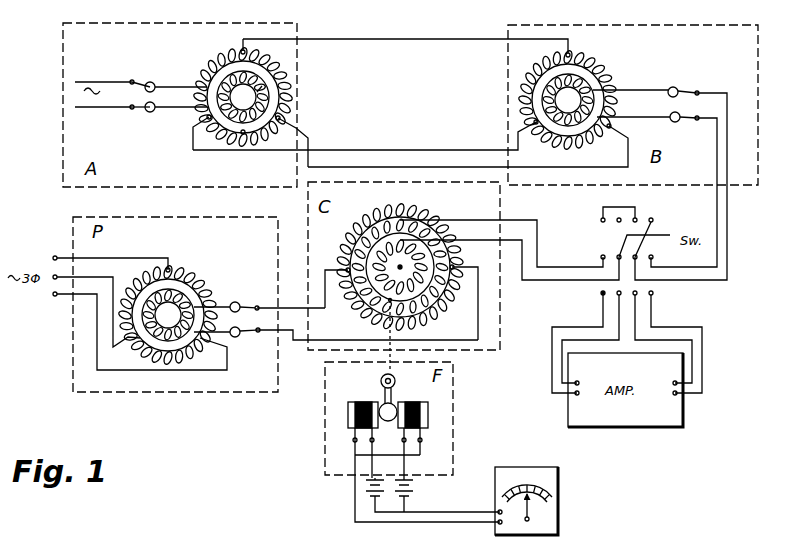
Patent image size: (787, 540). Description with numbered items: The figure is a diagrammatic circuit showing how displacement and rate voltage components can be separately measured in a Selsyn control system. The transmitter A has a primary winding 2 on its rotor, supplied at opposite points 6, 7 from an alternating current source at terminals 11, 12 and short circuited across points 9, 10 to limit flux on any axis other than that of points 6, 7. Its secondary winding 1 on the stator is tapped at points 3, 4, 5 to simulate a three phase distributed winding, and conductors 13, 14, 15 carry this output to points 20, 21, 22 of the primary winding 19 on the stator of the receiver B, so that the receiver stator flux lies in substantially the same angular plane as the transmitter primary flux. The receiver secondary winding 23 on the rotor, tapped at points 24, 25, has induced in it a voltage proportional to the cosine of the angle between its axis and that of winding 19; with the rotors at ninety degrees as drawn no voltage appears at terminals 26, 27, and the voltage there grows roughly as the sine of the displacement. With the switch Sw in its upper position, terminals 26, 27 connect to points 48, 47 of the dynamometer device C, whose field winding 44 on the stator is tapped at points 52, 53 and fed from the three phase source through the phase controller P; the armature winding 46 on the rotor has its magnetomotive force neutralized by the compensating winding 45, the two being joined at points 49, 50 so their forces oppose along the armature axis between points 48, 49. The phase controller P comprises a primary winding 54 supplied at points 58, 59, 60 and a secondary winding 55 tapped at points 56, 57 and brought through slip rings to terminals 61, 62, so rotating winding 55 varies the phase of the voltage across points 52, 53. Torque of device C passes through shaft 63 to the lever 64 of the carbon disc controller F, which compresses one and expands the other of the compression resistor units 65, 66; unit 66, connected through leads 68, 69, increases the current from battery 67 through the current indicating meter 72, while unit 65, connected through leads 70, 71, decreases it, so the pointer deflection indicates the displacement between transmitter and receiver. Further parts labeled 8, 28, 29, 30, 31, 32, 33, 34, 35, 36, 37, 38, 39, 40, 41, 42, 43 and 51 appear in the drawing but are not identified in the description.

The secondary winding 1 is at (262, 80).
The primary winding 2 is at (262, 86).
The tap point 3 is at (242, 49).
The tap point 4 is at (205, 119).
The tap point 5 is at (287, 121).
The connection point 6 is at (243, 134).
The connection point 7 is at (212, 72).
The rotor winding of motor A 8 is at (232, 93).
The short-circuit point 9 is at (266, 100).
The short-circuit point 10 is at (206, 88).
The power terminal 11 is at (131, 80).
The power terminal 12 is at (131, 110).
The conductor 13 is at (392, 41).
The conductor 14 is at (372, 149).
The conductor 15 is at (415, 166).
The primary winding 19 is at (600, 70).
The connection point 20 is at (574, 52).
The connection point 21 is at (537, 131).
The connection point 22 is at (612, 127).
The secondary winding 23 is at (553, 88).
The tap point 24 is at (553, 102).
The tap point 25 is at (606, 92).
The secondary terminal 26 is at (700, 91).
The secondary terminal 27 is at (697, 120).
The switch contact 28 is at (656, 258).
The switch contact 29 is at (639, 262).
The terminal 30 is at (654, 297).
The terminal 31 is at (654, 337).
The terminal 32 is at (615, 298).
The connecting wire 33 is at (612, 302).
The amplifier input terminal 34 is at (682, 382).
The amplifier input terminal 35 is at (682, 398).
The amplifier input terminal 36 is at (580, 382).
The amplifier input terminal 37 is at (576, 396).
The switch contact 38 is at (655, 222).
The switch contact 39 is at (637, 218).
The switch contact 40 is at (600, 220).
The switch contact 41 is at (617, 224).
The switch contact 42 is at (600, 257).
The terminal 43 is at (600, 293).
The field winding 44 is at (420, 221).
The compensating winding 45 is at (362, 226).
The armature winding 46 is at (378, 277).
The winding point 47 is at (403, 207).
The winding point 48 is at (420, 240).
The connection point 49 is at (425, 287).
The connection point 50 is at (400, 302).
The intermediate winding of motor C 51 is at (435, 300).
The tap point 52 is at (338, 267).
The tap point 53 is at (466, 265).
The primary winding 54 is at (188, 278).
The secondary winding 55 is at (205, 300).
The tap point 56 is at (200, 292).
The tap point 57 is at (185, 352).
The supply point 58 is at (176, 265).
The supply point 59 is at (130, 343).
The supply point 60 is at (205, 338).
The terminal 61 is at (262, 306).
The terminal 62 is at (257, 333).
The shaft 63 is at (393, 354).
The lever 64 is at (395, 398).
The compression resistor unit 65 is at (428, 413).
The compression resistor unit 66 is at (348, 407).
The battery 67 is at (400, 503).
The lead 68 is at (352, 442).
The lead 69 is at (370, 445).
The lead 70 is at (405, 445).
The lead 71 is at (424, 440).
The current indicating meter 72 is at (548, 510).